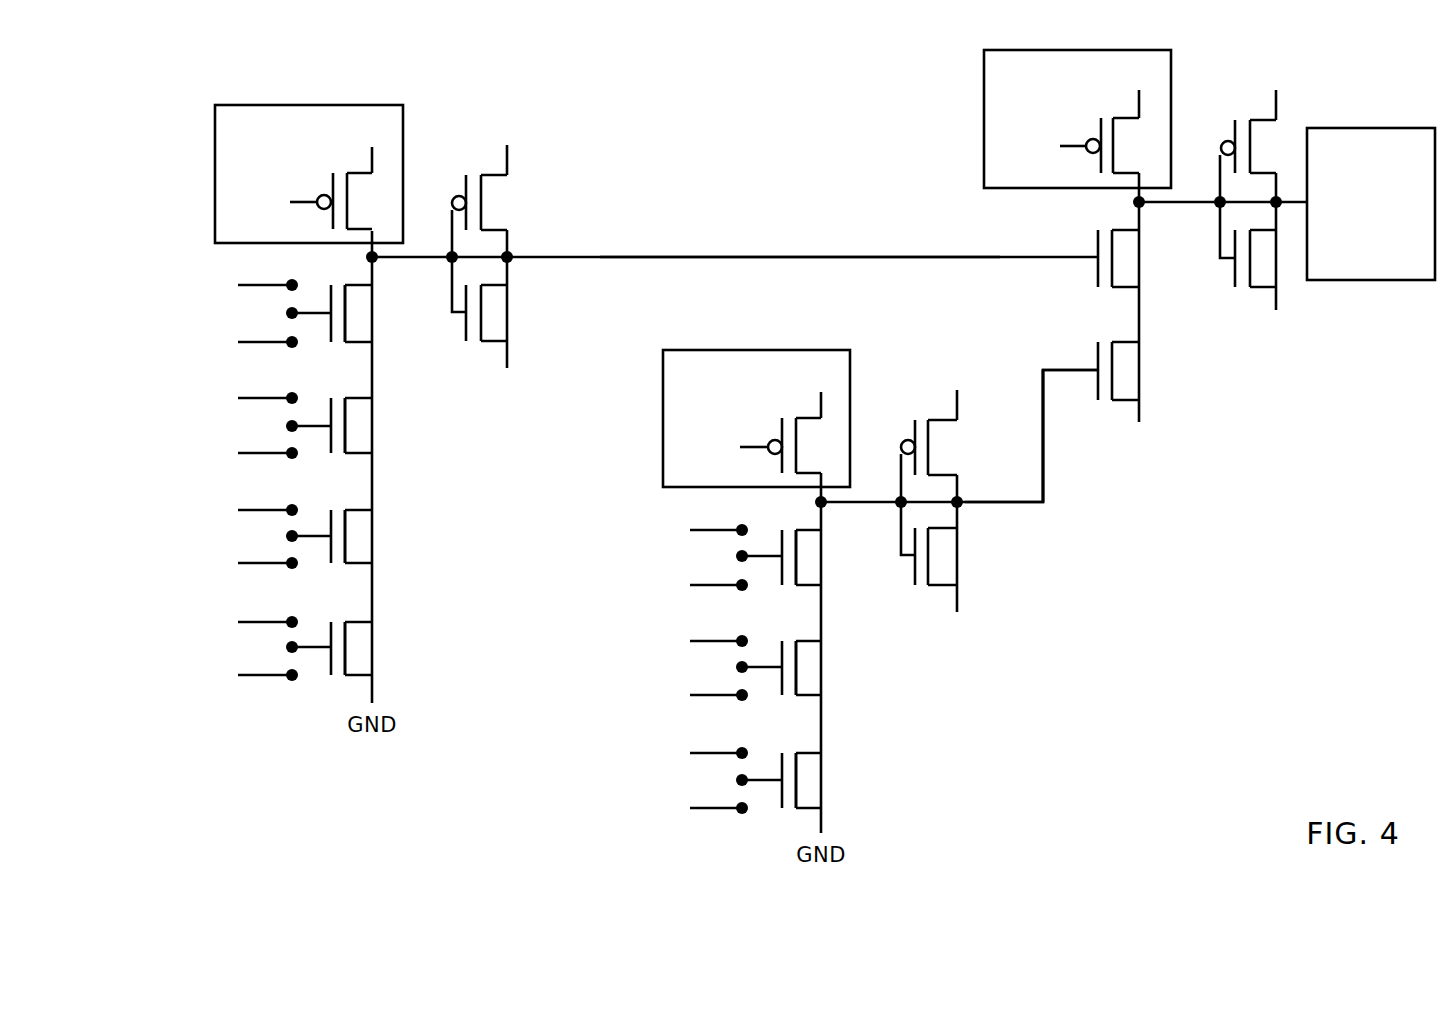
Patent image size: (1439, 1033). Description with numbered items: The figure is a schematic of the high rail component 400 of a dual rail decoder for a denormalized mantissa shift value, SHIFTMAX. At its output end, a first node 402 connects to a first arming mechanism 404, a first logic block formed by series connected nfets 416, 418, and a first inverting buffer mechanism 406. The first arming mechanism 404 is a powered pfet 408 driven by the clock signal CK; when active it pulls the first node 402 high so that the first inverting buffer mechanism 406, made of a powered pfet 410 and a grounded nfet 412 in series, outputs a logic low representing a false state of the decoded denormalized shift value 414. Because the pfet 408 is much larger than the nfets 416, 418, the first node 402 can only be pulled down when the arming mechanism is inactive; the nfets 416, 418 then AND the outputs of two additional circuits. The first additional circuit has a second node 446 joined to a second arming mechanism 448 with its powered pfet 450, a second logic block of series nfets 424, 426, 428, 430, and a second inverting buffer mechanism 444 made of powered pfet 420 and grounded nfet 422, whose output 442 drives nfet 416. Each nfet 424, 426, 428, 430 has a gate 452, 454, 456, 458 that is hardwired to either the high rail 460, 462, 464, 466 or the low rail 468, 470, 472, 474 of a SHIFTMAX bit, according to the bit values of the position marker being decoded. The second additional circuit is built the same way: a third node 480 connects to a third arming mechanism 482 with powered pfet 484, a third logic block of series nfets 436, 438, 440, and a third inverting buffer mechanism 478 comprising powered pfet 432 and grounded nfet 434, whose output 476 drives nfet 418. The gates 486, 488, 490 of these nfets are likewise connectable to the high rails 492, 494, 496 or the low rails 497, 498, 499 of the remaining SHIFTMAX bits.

The high rail component 400 is at (1225, 640).
The first node 402 is at (1130, 203).
The first arming mechanism 404 is at (1044, 119).
The first inverting buffer mechanism 406 is at (1200, 220).
The powered pfet 408 is at (1132, 116).
The powered pfet 410 is at (1268, 142).
The grounded nfet 412 is at (1267, 260).
The decoded denormalized shift value 414 is at (1417, 128).
The nfet 416 is at (1120, 287).
The nfet 418 is at (1130, 370).
The powered pfet 420 is at (493, 197).
The grounded nfet 422 is at (503, 312).
The nfet 424 is at (358, 315).
The nfet 426 is at (360, 425).
The nfet 428 is at (360, 537).
The nfet 430 is at (358, 647).
The powered pfet 432 is at (940, 415).
The grounded nfet 434 is at (940, 558).
The nfet 436 is at (810, 557).
The nfet 438 is at (813, 667).
The nfet 440 is at (813, 779).
The output 442 is at (679, 255).
The second inverting buffer mechanism 444 is at (525, 240).
The second node 446 is at (388, 258).
The second arming mechanism 448 is at (286, 151).
The powered pfet 450 is at (363, 172).
The gate 452 is at (318, 308).
The gate 454 is at (316, 425).
The gate 456 is at (316, 537).
The gate 458 is at (316, 648).
The high rail 460 is at (263, 287).
The high rail 462 is at (263, 400).
The high rail 464 is at (263, 512).
The high rail 466 is at (263, 624).
The low rail 468 is at (263, 344).
The low rail 470 is at (263, 455).
The low rail 472 is at (263, 565).
The low rail 474 is at (263, 677).
The output 476 is at (988, 502).
The third inverting buffer mechanism 478 is at (985, 513).
The third node 480 is at (842, 503).
The third arming mechanism 482 is at (756, 395).
The powered pfet 484 is at (812, 417).
The gate 486 is at (768, 550).
The gate 488 is at (768, 661).
The gate 490 is at (768, 773).
The high rail 492 is at (713, 533).
The high rail 494 is at (713, 644).
The high rail 496 is at (713, 756).
The low rail 497 is at (713, 588).
The low rail 498 is at (713, 698).
The low rail 499 is at (713, 811).